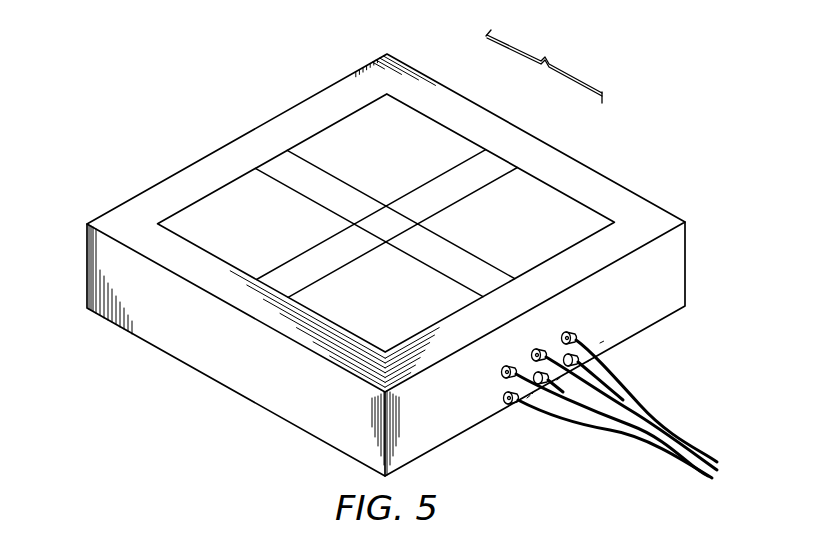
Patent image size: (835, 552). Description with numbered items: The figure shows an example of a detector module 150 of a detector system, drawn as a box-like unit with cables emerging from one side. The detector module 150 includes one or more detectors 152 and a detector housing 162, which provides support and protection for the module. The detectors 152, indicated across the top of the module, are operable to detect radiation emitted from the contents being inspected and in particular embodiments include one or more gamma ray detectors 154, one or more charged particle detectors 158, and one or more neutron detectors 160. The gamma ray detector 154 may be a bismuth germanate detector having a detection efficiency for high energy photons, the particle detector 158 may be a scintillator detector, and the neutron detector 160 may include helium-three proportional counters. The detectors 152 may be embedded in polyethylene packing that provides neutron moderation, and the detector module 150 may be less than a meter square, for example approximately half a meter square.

The detector module 150 is at (80, 266).
The detectors 152 is at (544, 66).
The gamma ray detector 154 is at (392, 220).
The charged particle detector 158 is at (522, 203).
The neutron detector 160 is at (447, 257).
The detector housing 162 is at (247, 147).